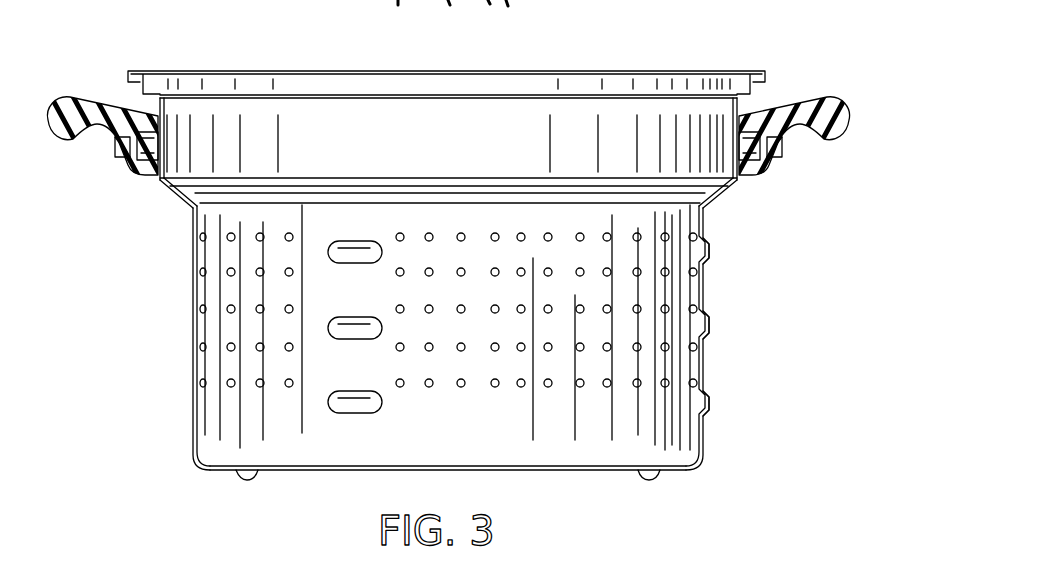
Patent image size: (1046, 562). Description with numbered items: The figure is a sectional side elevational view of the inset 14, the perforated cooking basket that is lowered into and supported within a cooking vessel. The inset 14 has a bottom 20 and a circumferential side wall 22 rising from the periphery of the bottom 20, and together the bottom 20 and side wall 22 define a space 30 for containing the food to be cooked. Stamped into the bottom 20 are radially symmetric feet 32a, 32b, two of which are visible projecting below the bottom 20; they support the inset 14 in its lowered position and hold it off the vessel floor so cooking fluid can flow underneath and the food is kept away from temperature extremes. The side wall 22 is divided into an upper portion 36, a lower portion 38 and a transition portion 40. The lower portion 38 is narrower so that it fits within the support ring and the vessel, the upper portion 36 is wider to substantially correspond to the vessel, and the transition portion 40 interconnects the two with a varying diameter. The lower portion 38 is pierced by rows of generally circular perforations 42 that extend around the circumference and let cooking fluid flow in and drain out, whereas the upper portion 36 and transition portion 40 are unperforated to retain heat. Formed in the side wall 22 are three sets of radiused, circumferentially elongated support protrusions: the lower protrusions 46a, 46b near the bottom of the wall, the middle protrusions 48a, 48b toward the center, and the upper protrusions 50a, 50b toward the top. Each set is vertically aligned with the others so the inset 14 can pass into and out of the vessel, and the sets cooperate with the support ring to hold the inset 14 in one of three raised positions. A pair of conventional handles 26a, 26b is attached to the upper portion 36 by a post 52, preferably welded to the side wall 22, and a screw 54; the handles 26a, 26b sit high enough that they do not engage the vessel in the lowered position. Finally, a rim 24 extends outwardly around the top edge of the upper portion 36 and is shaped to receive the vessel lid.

The inset 14 is at (862, 77).
The bottom 20 is at (340, 473).
The circumferential side wall 22 is at (710, 293).
The rim 24 is at (135, 71).
The handle 26a is at (62, 140).
The handle 26b is at (845, 140).
The space 30 is at (462, 338).
The foot 32a is at (243, 479).
The foot 32b is at (660, 483).
The upper portion 36 is at (740, 192).
The lower portion 38 is at (710, 365).
The transition portion 40 is at (712, 200).
The perforations 42 is at (288, 306).
The support protrusion 46a is at (366, 391).
The support protrusion 46b is at (712, 408).
The support protrusion 48a is at (366, 316).
The support protrusion 48b is at (710, 333).
The support protrusion 50a is at (368, 240).
The support protrusion 50b is at (710, 256).
The post 52 is at (143, 148).
The screw 54 is at (120, 135).